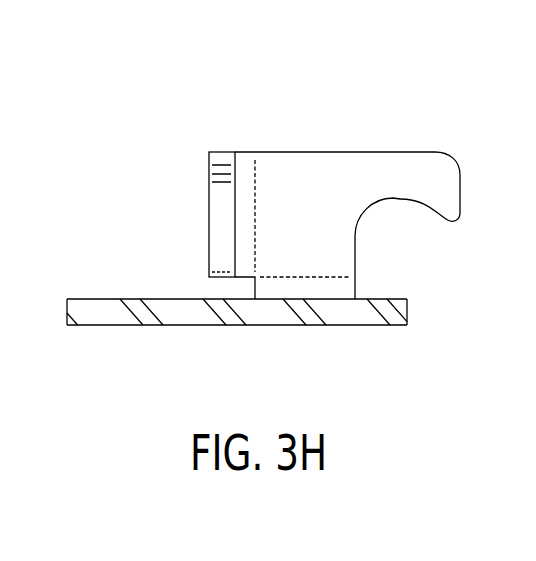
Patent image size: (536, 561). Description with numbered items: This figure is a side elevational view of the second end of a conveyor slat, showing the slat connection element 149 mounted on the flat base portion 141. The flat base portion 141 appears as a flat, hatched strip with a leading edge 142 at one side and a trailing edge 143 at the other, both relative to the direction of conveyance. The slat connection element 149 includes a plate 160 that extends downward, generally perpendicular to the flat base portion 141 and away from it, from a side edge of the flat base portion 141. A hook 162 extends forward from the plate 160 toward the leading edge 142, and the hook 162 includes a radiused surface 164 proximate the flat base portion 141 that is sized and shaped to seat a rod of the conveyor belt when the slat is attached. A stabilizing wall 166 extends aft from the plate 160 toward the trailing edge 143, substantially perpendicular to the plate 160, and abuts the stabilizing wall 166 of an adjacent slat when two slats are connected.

The slat connection element 149 is at (168, 95).
The plate 160 is at (310, 162).
The hook 162 is at (440, 170).
The radiused surface 164 is at (392, 198).
The stabilizing wall 166 is at (217, 223).
The flat base portion 141 is at (305, 325).
The leading edge 142 is at (407, 320).
The trailing edge 143 is at (67, 325).